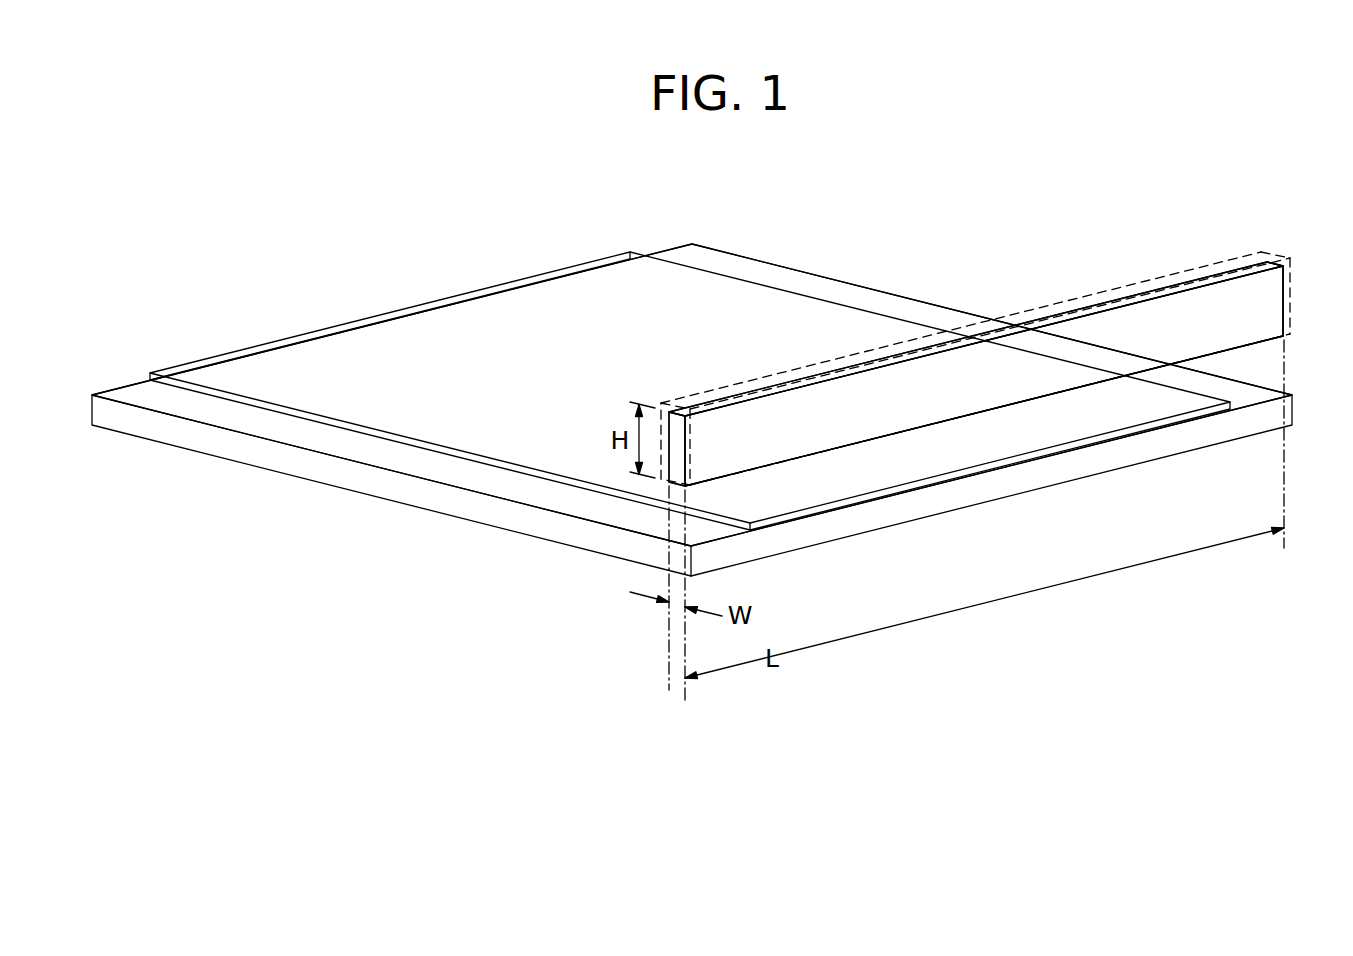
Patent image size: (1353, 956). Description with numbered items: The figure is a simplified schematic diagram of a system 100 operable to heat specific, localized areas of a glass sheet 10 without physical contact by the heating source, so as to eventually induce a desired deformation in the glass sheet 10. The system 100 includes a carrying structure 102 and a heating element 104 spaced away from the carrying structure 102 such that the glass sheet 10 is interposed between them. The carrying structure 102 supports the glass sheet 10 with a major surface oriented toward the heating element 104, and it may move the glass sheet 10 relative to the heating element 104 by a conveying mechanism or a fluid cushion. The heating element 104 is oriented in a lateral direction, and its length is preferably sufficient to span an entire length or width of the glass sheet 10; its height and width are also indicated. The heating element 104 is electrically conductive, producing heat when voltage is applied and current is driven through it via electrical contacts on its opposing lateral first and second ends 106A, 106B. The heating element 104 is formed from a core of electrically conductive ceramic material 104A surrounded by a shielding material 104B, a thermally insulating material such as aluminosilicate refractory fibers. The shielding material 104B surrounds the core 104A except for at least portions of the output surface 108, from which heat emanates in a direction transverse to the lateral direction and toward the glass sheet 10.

The system 100 is at (699, 184).
The glass sheet 10 is at (527, 305).
The carrying structure 102 is at (820, 526).
The heating element 104 is at (1105, 226).
The core of electrically conductive ceramic material 104A is at (933, 384).
The shielding material 104B is at (1087, 297).
The first end 106A is at (676, 410).
The second end 106B is at (1273, 262).
The output surface 108 is at (791, 460).